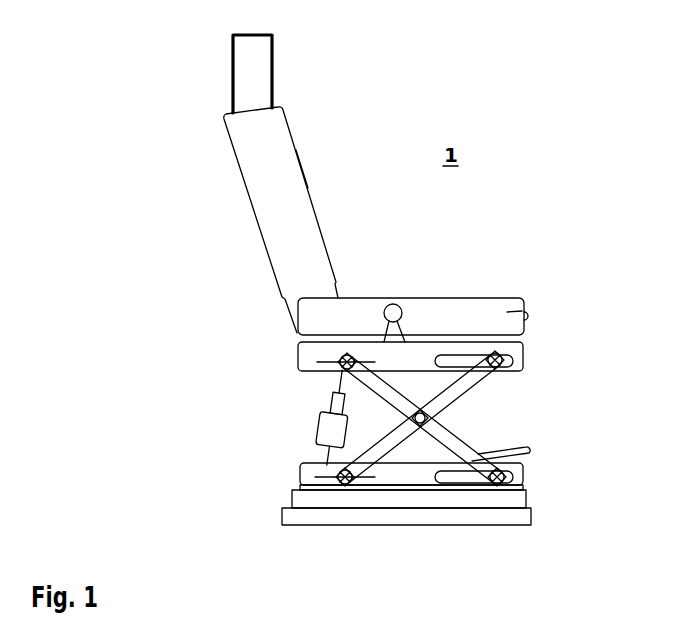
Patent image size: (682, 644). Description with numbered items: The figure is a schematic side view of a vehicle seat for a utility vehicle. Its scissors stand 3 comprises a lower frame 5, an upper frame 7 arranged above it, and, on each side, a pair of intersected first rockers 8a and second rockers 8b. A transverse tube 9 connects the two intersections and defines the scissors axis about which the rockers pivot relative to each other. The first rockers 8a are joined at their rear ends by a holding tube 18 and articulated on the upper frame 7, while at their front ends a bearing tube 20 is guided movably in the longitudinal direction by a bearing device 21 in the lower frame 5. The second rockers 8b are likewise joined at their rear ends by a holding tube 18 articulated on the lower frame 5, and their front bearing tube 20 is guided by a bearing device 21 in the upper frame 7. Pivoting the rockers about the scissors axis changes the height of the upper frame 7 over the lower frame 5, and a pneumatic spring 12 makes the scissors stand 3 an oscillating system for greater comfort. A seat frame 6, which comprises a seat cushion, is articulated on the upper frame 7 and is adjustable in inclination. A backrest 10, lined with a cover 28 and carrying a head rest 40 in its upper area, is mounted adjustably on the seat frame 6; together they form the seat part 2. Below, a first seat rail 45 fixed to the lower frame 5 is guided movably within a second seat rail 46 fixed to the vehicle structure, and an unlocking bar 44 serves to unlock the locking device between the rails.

The seat part 2 is at (335, 305).
The scissors stand 3 is at (337, 390).
The lower frame 5 is at (518, 477).
The seat frame 6 is at (498, 305).
The upper frame 7 is at (517, 350).
The first rockers 8a is at (478, 455).
The second rockers 8b is at (405, 432).
The transverse tube 9 is at (428, 416).
The backrest 10 is at (268, 160).
The pneumatic spring 12 is at (325, 427).
The holding tube 18 is at (340, 360).
The bearing tube 20 is at (500, 365).
The bearing device 21 is at (493, 358).
The cover 28 is at (303, 172).
The head rest 40 is at (260, 90).
The unlocking bar 44 is at (535, 447).
The first seat rail 45 is at (295, 495).
The second seat rail 46 is at (350, 515).